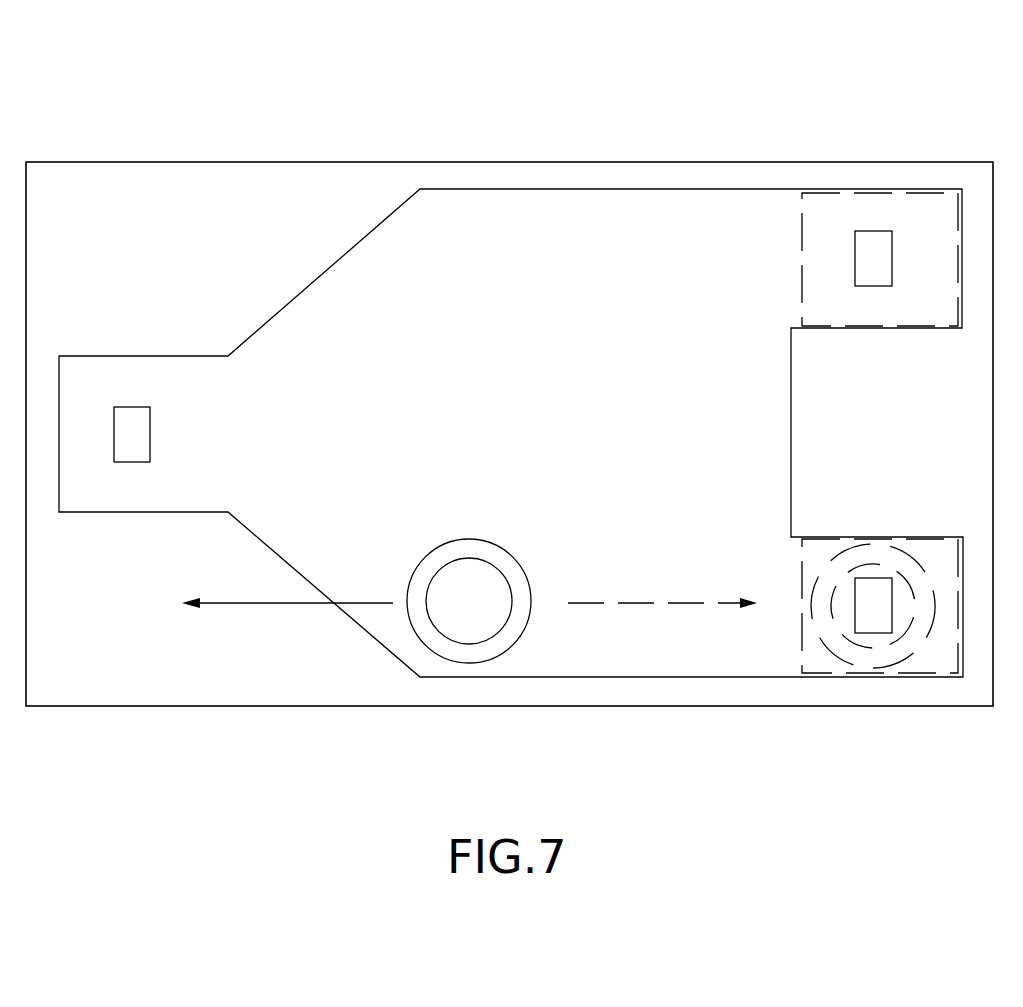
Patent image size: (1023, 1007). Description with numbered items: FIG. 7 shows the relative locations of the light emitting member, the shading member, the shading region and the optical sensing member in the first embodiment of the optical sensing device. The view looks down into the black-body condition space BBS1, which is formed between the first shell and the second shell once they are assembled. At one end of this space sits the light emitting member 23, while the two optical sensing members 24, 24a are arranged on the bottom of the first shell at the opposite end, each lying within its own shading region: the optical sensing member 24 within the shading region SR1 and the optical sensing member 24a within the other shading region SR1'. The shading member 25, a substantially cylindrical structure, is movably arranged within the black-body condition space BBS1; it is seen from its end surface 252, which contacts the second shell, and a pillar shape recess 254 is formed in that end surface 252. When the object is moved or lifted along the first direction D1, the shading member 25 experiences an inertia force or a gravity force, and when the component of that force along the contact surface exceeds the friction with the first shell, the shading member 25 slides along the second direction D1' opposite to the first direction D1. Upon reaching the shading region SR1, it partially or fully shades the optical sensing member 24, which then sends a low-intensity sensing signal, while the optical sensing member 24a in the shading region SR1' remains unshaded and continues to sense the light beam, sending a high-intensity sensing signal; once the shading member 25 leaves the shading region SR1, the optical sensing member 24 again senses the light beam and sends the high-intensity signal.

The black-body condition space BBS1 is at (604, 243).
The light emitting member 23 is at (125, 425).
The optical sensing member 24 is at (873, 605).
The optical sensing member 24a is at (870, 257).
The shading member 25 is at (505, 516).
The end surface 252 is at (492, 556).
The pillar shape recess 254 is at (439, 585).
The shading region SR1 is at (866, 666).
The shading region SR1' is at (850, 202).
The first direction D1 is at (287, 591).
The second direction D1' is at (662, 589).